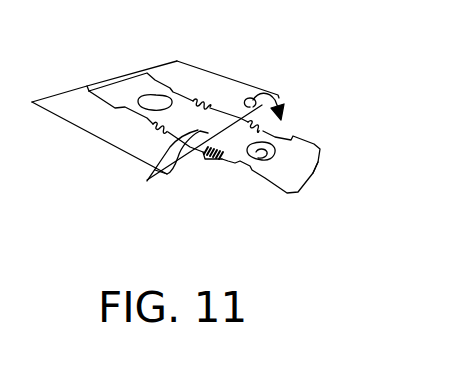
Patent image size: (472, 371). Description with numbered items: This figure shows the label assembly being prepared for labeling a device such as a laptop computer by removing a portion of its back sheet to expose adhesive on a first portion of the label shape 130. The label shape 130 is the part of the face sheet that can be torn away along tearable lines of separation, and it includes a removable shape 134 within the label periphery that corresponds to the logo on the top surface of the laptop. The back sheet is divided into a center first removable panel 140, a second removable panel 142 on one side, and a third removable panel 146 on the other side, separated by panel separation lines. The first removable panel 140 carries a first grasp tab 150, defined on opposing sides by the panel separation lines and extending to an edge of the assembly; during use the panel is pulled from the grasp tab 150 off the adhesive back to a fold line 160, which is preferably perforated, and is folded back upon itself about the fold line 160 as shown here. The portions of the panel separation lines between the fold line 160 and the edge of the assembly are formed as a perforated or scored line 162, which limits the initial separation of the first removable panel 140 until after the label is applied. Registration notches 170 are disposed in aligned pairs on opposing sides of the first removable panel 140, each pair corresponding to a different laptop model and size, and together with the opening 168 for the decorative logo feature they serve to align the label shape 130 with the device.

The label shape 130 is at (122, 85).
The removable shape 134 is at (263, 153).
The first removable panel 140 is at (303, 148).
The second removable panel 142 is at (222, 82).
The third removable panel 146 is at (118, 141).
The first grasp tab 150 is at (308, 170).
The fold line 160 is at (160, 168).
The perforated or scored line 162 is at (190, 148).
The opening 168 is at (157, 103).
The registration notches 170 is at (220, 165).